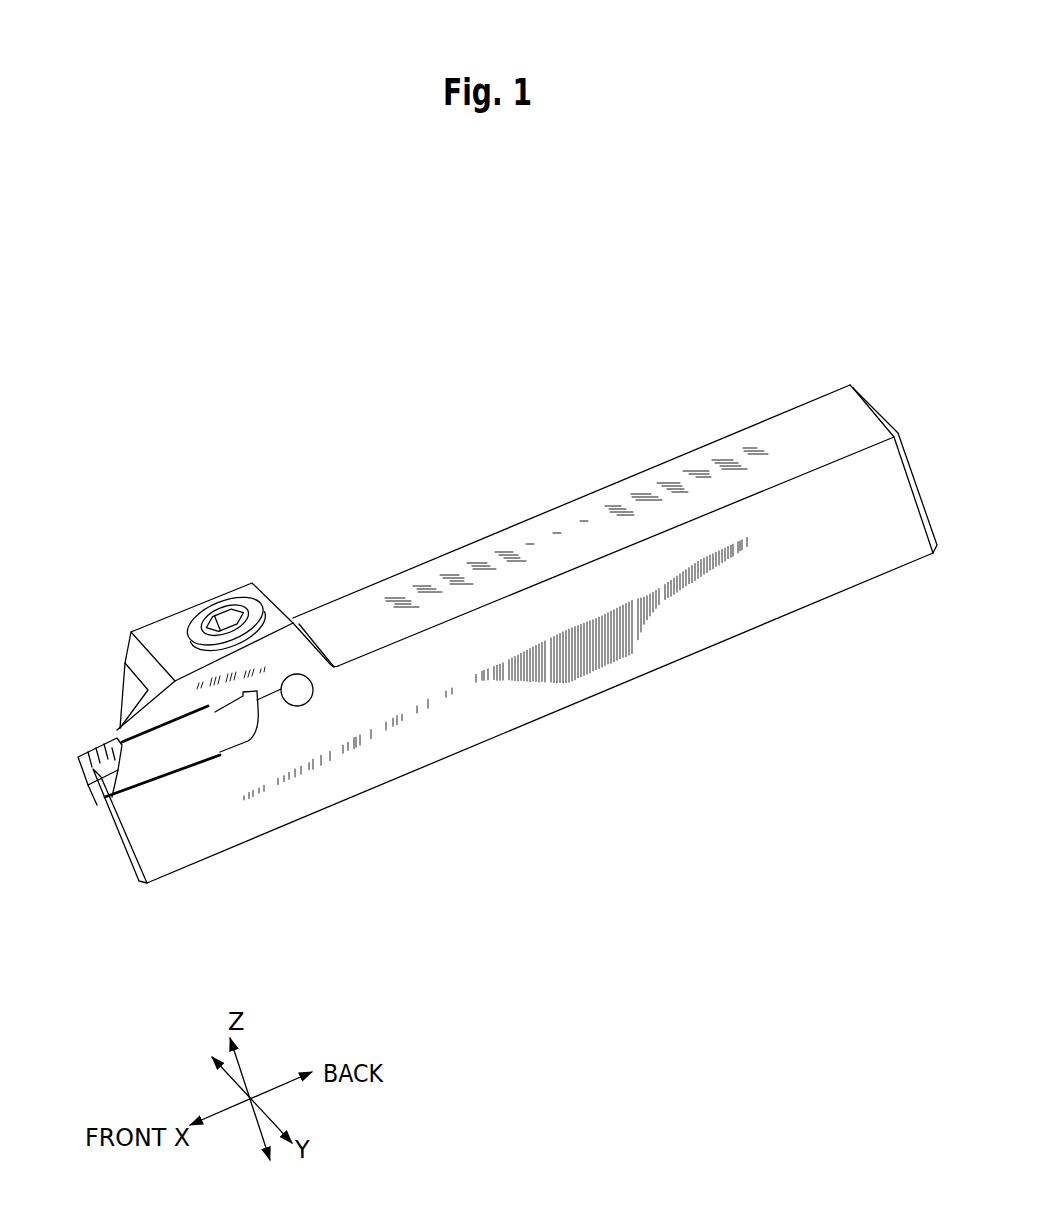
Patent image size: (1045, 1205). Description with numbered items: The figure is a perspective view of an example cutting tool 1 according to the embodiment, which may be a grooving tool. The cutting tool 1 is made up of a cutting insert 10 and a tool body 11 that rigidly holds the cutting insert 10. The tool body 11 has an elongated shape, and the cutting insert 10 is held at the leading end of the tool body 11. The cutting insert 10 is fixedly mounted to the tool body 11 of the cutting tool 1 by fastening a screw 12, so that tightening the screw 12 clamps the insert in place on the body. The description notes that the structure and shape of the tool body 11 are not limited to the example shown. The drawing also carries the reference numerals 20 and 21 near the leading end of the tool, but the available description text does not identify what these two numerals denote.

The cutting tool 1 is at (487, 418).
The cutting insert 10 is at (222, 759).
The tool body 11 is at (373, 592).
The screw 12 is at (237, 607).
The cutting insert 20 is at (87, 750).
The insert pocket 21 is at (149, 772).